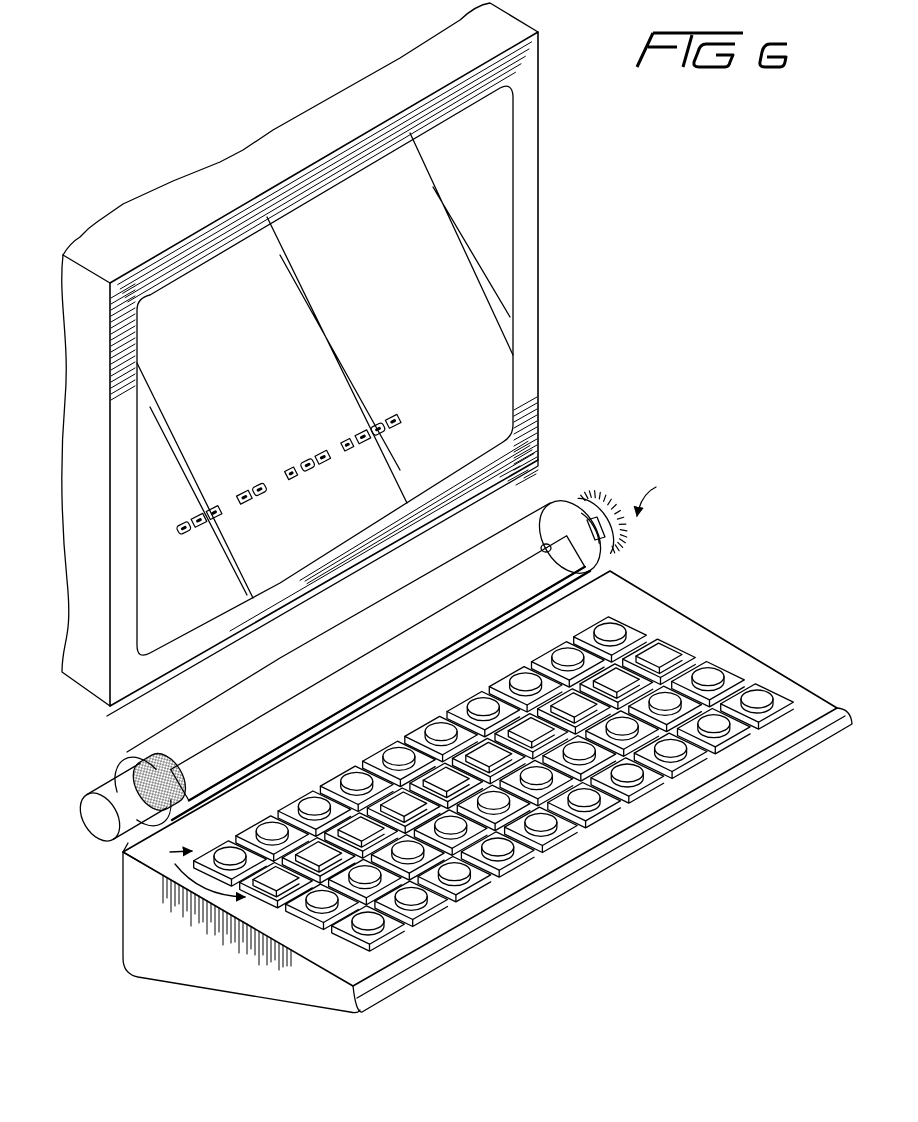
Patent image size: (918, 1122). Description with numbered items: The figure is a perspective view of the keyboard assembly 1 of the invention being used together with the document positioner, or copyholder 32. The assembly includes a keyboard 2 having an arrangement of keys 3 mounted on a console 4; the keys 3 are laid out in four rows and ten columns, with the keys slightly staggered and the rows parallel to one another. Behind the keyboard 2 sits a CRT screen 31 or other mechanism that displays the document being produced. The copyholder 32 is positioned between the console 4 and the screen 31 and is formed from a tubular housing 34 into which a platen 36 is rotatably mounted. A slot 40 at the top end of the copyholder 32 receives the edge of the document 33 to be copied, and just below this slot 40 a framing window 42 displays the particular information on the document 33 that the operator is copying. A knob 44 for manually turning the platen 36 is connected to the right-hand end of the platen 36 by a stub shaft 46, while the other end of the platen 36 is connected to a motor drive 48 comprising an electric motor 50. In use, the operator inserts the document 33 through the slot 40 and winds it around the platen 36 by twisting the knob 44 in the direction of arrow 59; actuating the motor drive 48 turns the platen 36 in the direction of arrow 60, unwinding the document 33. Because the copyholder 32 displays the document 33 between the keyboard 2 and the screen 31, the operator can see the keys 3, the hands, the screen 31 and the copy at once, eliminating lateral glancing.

The keyboard assembly 1 is at (457, 508).
The keyboard 2 is at (563, 849).
The keys 3 is at (196, 870).
The console 4 is at (165, 940).
The CRT screen 31 is at (500, 222).
The copyholder 32 is at (438, 655).
The document 33 is at (537, 510).
The tubular housing 34 is at (603, 580).
The platen 36 is at (125, 852).
The slot 40 is at (130, 750).
The framing window 42 is at (547, 544).
The knob 44 is at (613, 540).
The stub shaft 46 is at (594, 518).
The motor drive 48 is at (104, 822).
The electric motor 50 is at (117, 790).
The arrow 59 is at (661, 496).
The arrow 60 is at (141, 752).